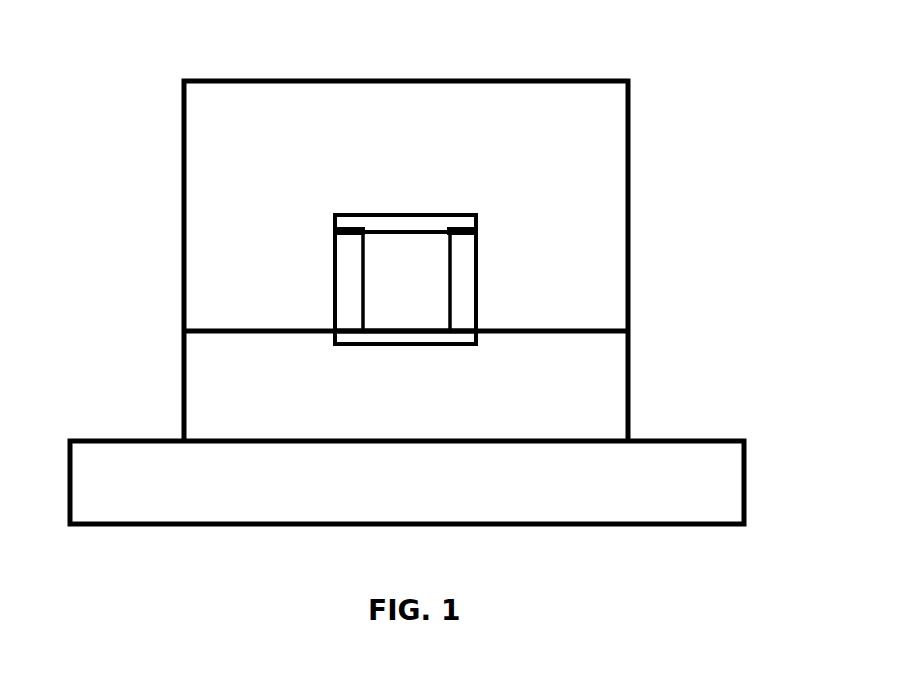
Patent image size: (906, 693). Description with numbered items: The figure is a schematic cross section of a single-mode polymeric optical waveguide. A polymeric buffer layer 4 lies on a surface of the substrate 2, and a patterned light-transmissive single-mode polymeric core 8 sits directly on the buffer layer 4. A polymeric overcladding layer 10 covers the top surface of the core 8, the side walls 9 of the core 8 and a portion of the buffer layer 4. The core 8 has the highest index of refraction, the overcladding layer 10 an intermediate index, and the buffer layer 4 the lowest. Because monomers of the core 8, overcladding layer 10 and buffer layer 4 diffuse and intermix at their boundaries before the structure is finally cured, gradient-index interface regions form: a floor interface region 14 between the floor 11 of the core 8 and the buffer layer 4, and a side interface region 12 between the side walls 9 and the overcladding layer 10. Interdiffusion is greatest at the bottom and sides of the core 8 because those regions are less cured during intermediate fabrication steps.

The substrate 2 is at (556, 466).
The polymeric buffer layer 4 is at (568, 393).
The light-transmissive single-mode polymeric core 8 is at (400, 250).
The side walls of the core 9 is at (360, 292).
The polymeric overcladding layer 10 is at (427, 123).
The floor of the core 11 is at (392, 333).
The side interface region 12 is at (463, 260).
The floor interface region 14 is at (453, 328).